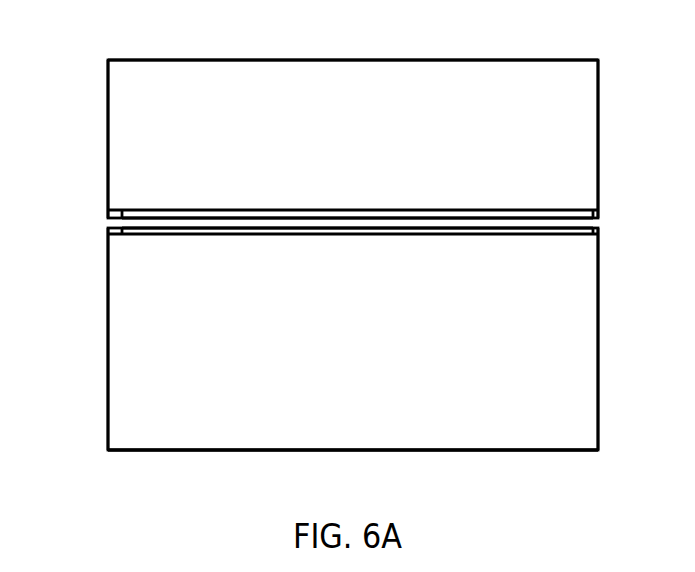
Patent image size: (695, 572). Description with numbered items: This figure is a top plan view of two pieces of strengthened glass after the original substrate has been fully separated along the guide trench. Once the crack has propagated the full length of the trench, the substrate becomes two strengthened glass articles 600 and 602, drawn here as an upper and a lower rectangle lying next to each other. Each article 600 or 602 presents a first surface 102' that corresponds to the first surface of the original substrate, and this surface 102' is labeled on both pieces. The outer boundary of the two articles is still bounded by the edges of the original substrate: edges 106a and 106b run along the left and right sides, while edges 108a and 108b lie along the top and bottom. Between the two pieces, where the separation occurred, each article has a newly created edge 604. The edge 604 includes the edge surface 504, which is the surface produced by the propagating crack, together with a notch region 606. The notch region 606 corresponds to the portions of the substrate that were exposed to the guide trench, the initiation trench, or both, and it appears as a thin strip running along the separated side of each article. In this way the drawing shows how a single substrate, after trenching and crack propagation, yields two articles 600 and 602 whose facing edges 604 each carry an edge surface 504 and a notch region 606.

The strengthened glass article 600 is at (415, 47).
The first surface 102' is at (353, 255).
The edge 108a is at (577, 59).
The edge 108b is at (580, 453).
The edge 106a is at (106, 157).
The edge 106b is at (600, 157).
The edge 604 is at (125, 222).
The notch region 606 is at (583, 222).
The edge surface 504 is at (564, 223).
The strengthened glass article 602 is at (425, 460).